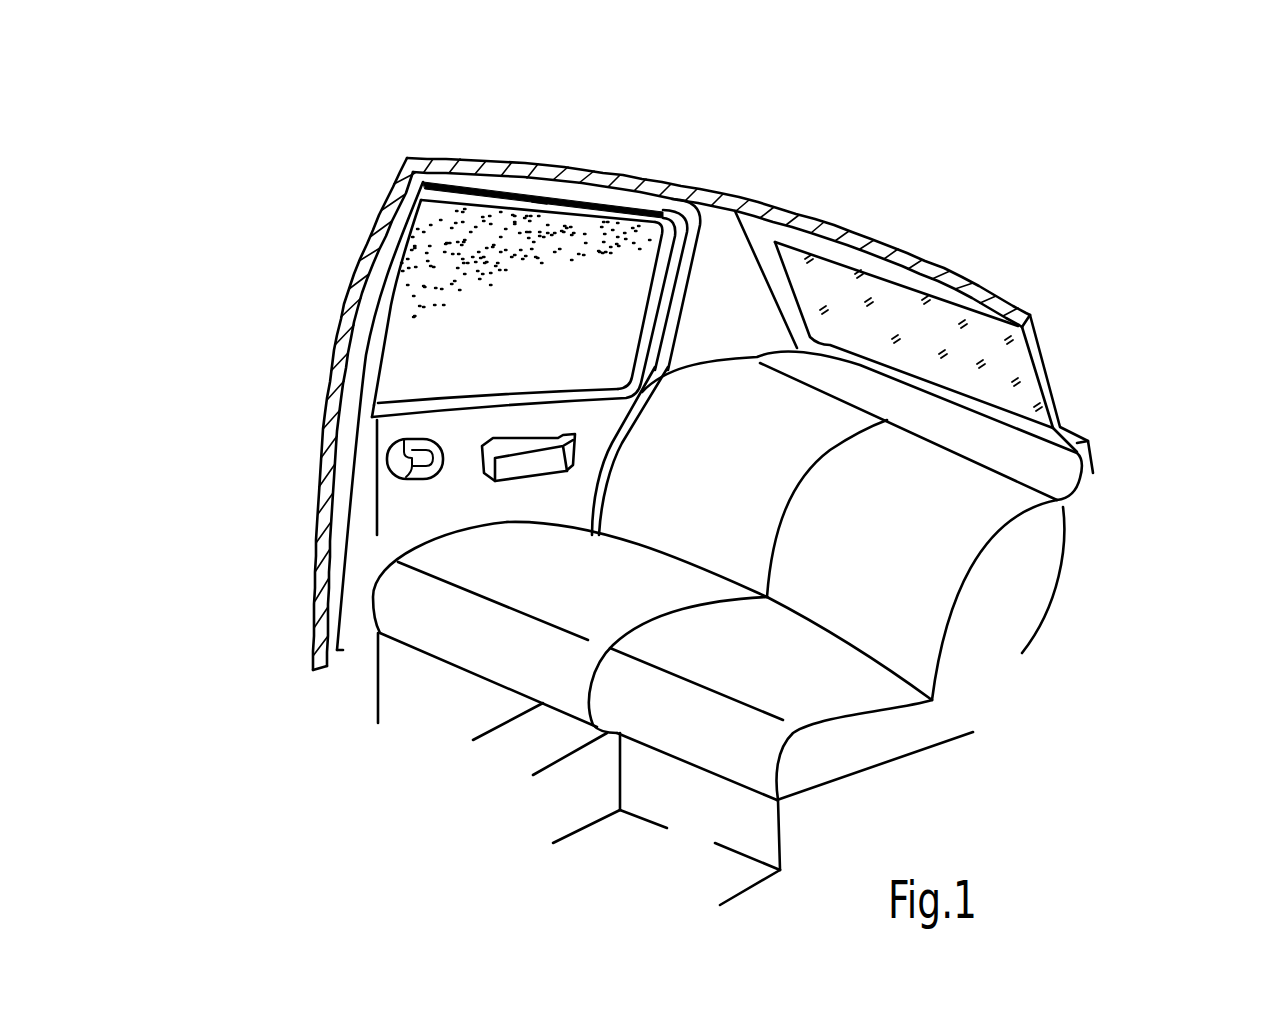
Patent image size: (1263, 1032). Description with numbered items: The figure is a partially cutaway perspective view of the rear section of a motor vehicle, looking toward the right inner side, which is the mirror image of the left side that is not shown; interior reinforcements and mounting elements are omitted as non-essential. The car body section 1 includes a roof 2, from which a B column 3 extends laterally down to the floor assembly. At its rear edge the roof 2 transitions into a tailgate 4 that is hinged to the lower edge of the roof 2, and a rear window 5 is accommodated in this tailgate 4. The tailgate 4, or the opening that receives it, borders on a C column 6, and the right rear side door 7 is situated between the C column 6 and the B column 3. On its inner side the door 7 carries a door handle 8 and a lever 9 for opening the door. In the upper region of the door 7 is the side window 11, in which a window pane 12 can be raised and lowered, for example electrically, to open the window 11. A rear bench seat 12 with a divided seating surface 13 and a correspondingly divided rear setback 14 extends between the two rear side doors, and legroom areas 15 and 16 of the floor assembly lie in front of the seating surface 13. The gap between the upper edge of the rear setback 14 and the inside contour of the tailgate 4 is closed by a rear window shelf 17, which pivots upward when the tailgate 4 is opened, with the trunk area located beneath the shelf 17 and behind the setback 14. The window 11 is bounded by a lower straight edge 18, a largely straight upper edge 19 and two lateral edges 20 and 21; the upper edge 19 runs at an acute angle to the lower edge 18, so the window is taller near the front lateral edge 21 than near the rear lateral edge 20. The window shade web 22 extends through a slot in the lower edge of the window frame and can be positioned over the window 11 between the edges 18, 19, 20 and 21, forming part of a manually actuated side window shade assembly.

The car body section 1 is at (1005, 205).
The roof 2 is at (617, 187).
The B column 3 is at (345, 318).
The tailgate 4 is at (773, 255).
The rear window 5 is at (1010, 350).
The C column 6 is at (727, 272).
The right rear side door 7 is at (363, 515).
The door handle 8 is at (540, 477).
The lever 9 is at (417, 480).
The side window 11 is at (407, 258).
The window pane / rear bench seat 12 is at (387, 348).
The seating surface 13 is at (830, 742).
The rear setback 14 is at (1007, 577).
The legroom area 15 is at (705, 858).
The legroom area 16 is at (443, 742).
The rear window shelf 17 is at (1060, 477).
The lower straight edge 18 is at (443, 407).
The upper edge 19 is at (518, 197).
The rear lateral edge 20 is at (667, 327).
The front lateral edge 21 is at (387, 298).
The window shade web 22 is at (475, 253).